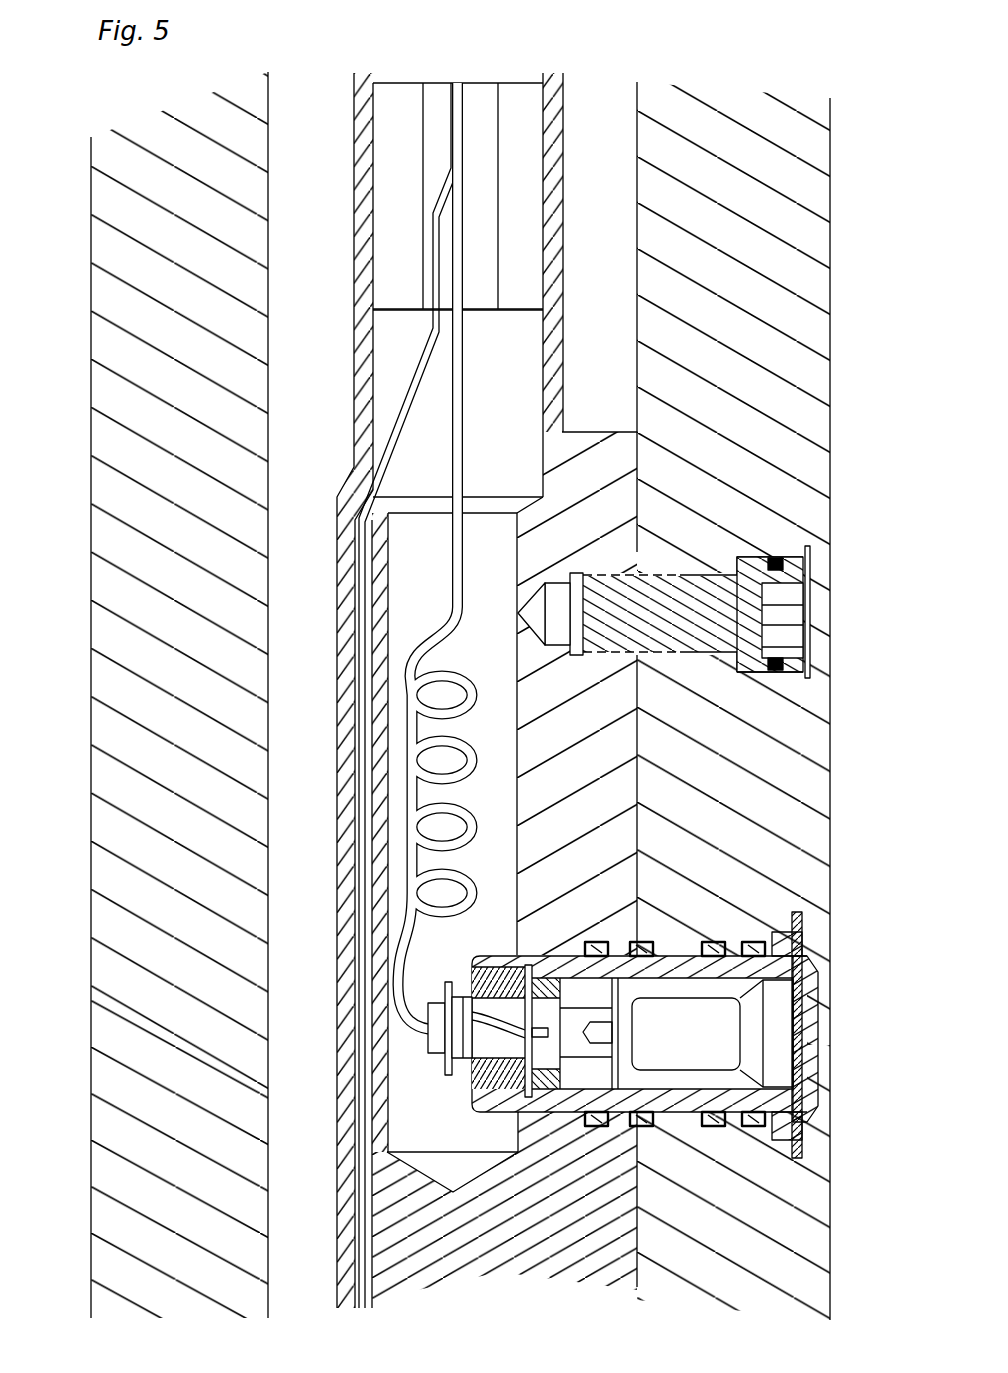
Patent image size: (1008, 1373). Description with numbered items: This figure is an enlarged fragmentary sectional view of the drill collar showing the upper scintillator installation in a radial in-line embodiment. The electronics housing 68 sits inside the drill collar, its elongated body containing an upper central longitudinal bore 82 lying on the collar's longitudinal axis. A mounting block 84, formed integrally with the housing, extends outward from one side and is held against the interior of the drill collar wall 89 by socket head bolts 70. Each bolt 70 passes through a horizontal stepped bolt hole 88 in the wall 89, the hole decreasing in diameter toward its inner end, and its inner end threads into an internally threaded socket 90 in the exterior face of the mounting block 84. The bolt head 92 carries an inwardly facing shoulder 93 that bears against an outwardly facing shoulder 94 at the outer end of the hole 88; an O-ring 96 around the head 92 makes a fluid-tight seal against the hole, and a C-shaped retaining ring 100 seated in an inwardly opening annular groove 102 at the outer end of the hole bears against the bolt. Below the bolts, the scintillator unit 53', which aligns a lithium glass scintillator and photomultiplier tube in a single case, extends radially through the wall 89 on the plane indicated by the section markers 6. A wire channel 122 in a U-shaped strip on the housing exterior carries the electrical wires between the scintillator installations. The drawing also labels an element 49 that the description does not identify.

The section line 6- 6 is at (85, 1032).
The conduit 49 is at (331, 374).
The scintillator unit 53' is at (656, 1034).
The electronics housing 68 is at (343, 277).
The socket head bolt 70 is at (705, 577).
The upper central longitudinal bore 82 is at (517, 400).
The mounting block 84 is at (588, 432).
The stepped bolt hole 88 is at (730, 655).
The drill collar wall 89 is at (760, 420).
The internally threaded socket 90 is at (638, 655).
The bolt head 92 is at (760, 672).
The inwardly facing shoulder 93 is at (722, 565).
The outwardly facing shoulder 94 is at (750, 674).
The O-ring 96 is at (783, 560).
The C-shaped retaining ring 100 is at (812, 560).
The annular groove 102 is at (812, 668).
The wire channel 122 is at (352, 950).